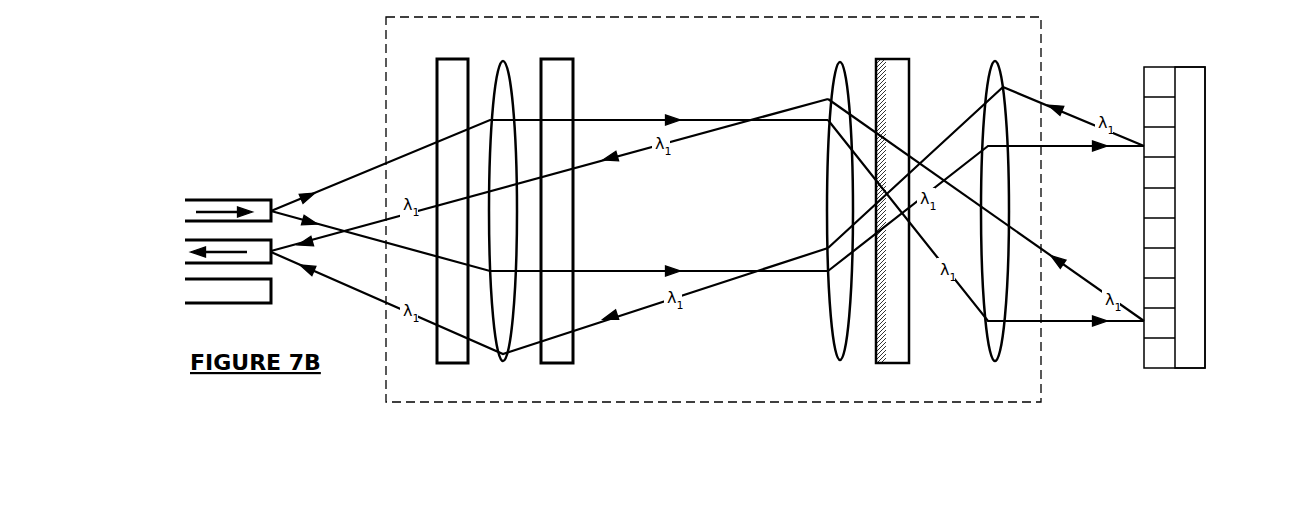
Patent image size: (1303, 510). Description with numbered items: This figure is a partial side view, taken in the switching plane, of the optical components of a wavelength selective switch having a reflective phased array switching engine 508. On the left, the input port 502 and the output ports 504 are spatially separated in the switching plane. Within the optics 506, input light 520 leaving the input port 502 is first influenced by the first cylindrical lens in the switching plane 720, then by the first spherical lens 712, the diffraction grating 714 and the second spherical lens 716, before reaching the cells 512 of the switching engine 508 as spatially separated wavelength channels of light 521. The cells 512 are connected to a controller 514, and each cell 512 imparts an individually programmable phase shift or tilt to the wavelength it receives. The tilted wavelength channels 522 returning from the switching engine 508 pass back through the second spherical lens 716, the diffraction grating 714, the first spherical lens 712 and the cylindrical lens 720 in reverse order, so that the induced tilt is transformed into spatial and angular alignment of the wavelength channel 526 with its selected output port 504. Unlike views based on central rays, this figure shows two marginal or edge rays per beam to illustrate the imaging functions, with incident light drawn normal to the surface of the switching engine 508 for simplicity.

The input port 502 is at (220, 200).
The output ports 504 is at (220, 238).
The optics 506 is at (385, 71).
The phased array switching engine 508 is at (1177, 66).
The cells 512 is at (1177, 328).
The controller 514 is at (1207, 167).
The input light 520 is at (296, 216).
The spatially separated wavelength channels of light 521 is at (1060, 148).
The wanted diffraction orders 522 is at (1067, 110).
The wavelength channel 526 is at (290, 247).
The first spherical lens 712 is at (840, 361).
The diffraction grating 714 is at (900, 363).
The second spherical lens 716 is at (996, 362).
The first cylindrical lens in the switching plane 720 is at (503, 357).